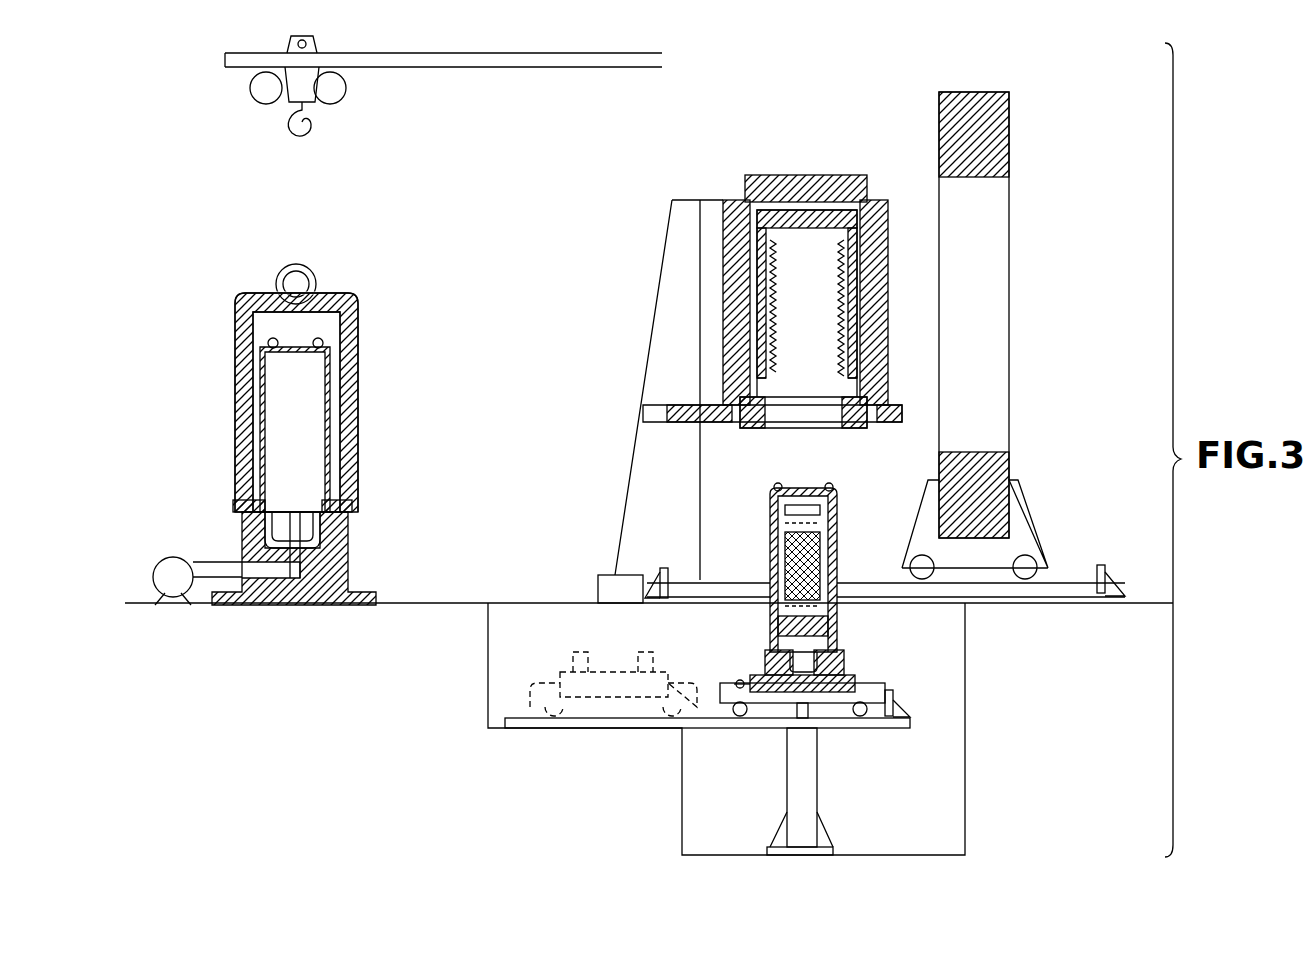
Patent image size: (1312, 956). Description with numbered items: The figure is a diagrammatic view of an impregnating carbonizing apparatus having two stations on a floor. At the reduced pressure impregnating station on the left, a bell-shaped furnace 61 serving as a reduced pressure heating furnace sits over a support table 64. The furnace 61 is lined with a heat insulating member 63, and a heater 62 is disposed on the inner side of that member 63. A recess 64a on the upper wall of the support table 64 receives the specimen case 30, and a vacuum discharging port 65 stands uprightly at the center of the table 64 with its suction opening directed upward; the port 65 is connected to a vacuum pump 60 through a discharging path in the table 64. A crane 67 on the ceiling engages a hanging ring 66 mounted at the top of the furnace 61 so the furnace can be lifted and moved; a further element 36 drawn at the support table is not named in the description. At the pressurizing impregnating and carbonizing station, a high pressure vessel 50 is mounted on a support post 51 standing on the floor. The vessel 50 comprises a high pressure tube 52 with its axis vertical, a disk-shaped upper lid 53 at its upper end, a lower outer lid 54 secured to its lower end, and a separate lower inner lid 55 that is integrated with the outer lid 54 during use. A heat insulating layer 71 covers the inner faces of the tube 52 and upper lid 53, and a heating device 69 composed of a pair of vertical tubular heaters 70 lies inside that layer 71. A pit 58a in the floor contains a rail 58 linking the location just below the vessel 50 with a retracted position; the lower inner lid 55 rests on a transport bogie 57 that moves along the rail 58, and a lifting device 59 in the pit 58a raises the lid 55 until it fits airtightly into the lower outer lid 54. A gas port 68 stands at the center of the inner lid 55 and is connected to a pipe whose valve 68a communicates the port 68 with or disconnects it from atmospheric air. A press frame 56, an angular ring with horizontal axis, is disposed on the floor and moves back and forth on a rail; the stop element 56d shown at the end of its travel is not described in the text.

The specimen case 30 is at (280, 420).
The outlet channel 36 is at (296, 510).
The high pressure vessel 50 is at (735, 200).
The support post 51 is at (652, 478).
The high pressure tube 52 is at (885, 226).
The upper lid 53 is at (845, 178).
The lower outer lid 54 is at (850, 430).
The lower inner lid 55 is at (850, 670).
The press frame 56 is at (1005, 130).
The rail stop 56d is at (1098, 568).
The transport bogie 57 is at (887, 690).
The rail 58 is at (728, 728).
The pit 58a is at (965, 758).
The lifting device 59 is at (812, 762).
The vacuum pump 60 is at (168, 558).
The bell-shaped furnace 61 is at (358, 306).
The heater 62 is at (342, 356).
The heat insulating member 63 is at (358, 416).
The support table 64 is at (352, 555).
The recess 64a is at (352, 506).
The vacuum discharging port 65 is at (240, 508).
The hanging ring 66 is at (318, 278).
The crane 67 is at (312, 98).
The gas port 68 is at (806, 662).
The valve 68a is at (738, 682).
The heating device 69 is at (870, 295).
The tubular heaters 70 is at (776, 292).
The heat insulating layer 71 is at (805, 212).